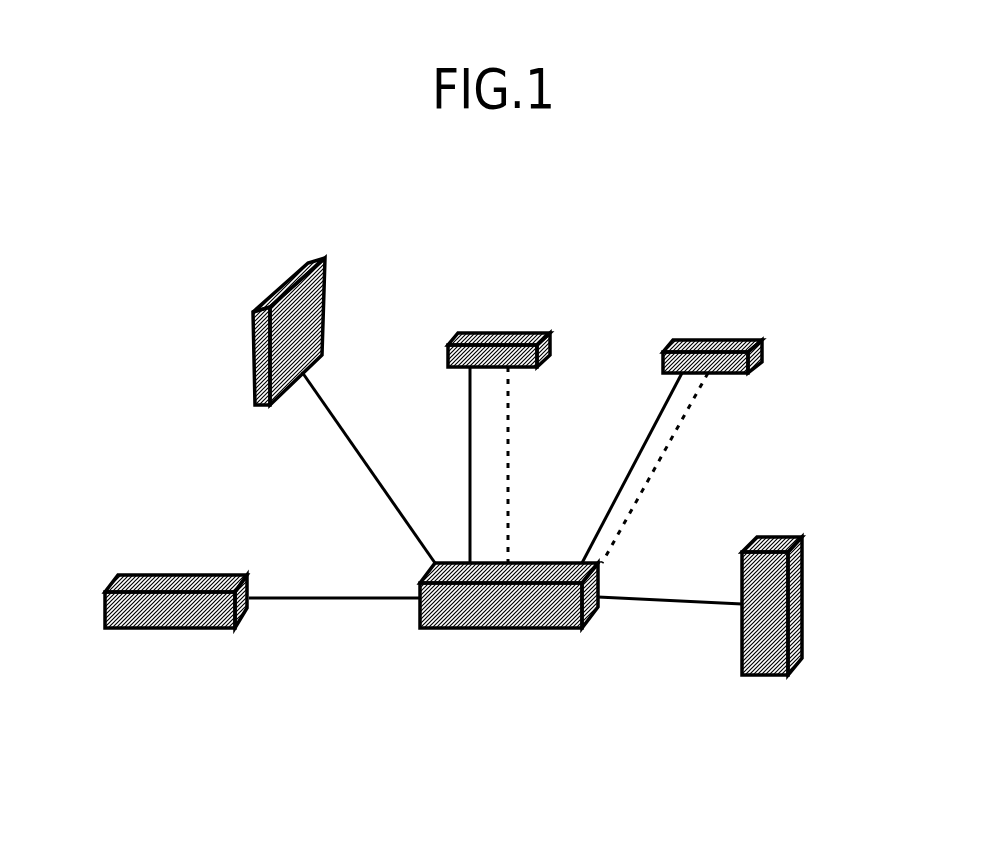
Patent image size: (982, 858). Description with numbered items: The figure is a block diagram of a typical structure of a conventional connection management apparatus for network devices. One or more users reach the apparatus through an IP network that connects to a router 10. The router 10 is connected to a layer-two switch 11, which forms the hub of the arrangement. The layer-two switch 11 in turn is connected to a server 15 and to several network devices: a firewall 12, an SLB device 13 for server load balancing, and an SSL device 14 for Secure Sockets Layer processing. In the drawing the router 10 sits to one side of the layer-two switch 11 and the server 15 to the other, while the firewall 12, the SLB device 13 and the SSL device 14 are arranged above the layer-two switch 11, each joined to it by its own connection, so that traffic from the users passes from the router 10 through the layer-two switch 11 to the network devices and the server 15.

The router 10 is at (140, 573).
The layer-2 switch 11 is at (425, 572).
The firewall (FW) 12 is at (282, 293).
The SLB (Server Load Balancing) device 13 is at (500, 327).
The SSL (Secure Sockets Layer) device 14 is at (725, 338).
The server 15 is at (797, 535).